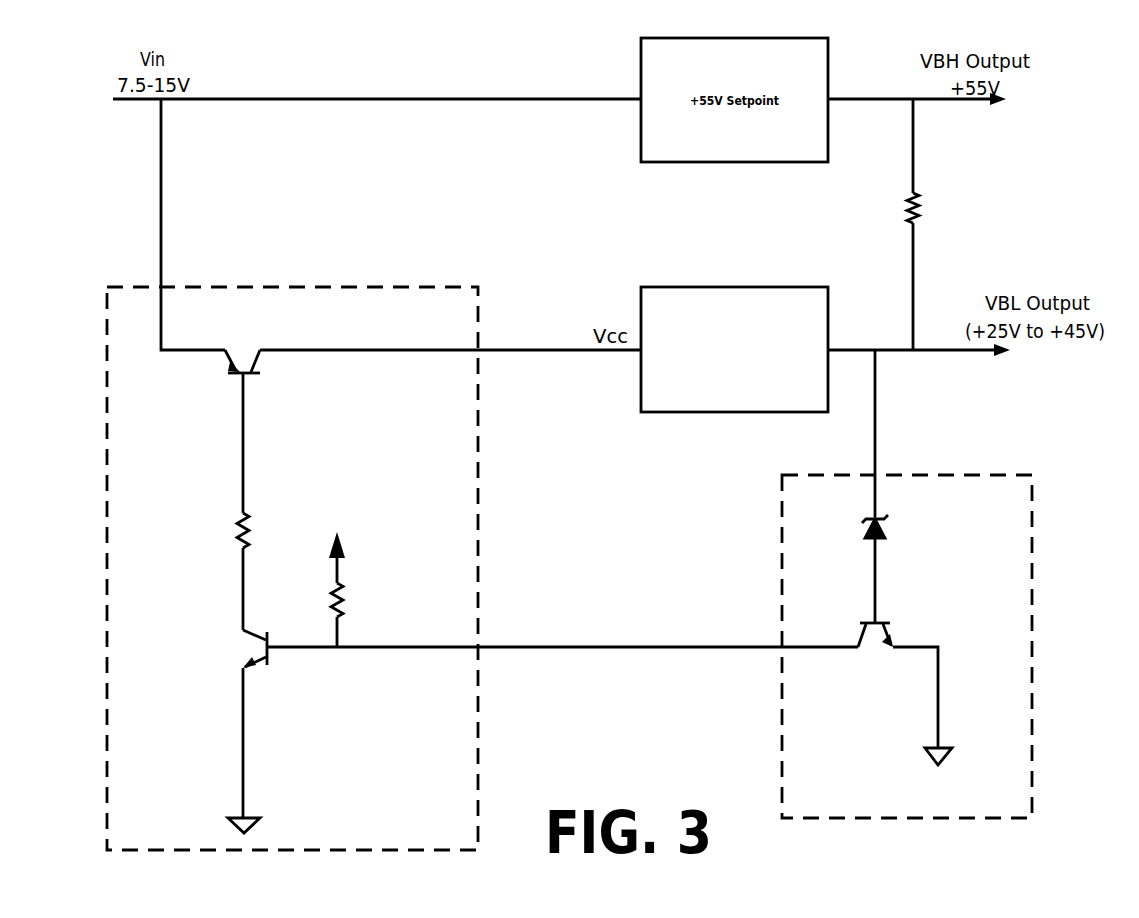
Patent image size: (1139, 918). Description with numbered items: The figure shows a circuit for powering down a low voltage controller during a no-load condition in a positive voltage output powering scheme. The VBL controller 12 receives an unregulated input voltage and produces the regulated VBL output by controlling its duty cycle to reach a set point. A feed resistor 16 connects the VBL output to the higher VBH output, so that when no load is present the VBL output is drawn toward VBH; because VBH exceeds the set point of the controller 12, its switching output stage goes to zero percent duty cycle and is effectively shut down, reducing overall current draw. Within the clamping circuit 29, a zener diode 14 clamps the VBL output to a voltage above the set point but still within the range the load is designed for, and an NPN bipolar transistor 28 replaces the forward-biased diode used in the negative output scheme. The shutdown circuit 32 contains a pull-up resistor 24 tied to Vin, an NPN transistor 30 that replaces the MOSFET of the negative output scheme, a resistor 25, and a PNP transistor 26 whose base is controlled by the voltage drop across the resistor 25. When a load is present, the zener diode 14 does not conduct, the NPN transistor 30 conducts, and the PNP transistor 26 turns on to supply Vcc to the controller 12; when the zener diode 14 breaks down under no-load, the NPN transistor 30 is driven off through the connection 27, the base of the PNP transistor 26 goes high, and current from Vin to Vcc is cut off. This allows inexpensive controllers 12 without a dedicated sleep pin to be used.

The VBL controller 12 is at (688, 287).
The zener diode 14 is at (863, 528).
The feed resistor 16 is at (918, 206).
The pull-up resistor 24 is at (340, 585).
The resistor 25 is at (247, 515).
The PNP transistor 26 is at (266, 370).
The base connection line 27 is at (625, 679).
The NPN bipolar transistor 28 is at (878, 652).
The clamping circuit 29 is at (778, 517).
The NPN transistor 30 is at (237, 649).
The shutdown circuit 32 is at (397, 287).